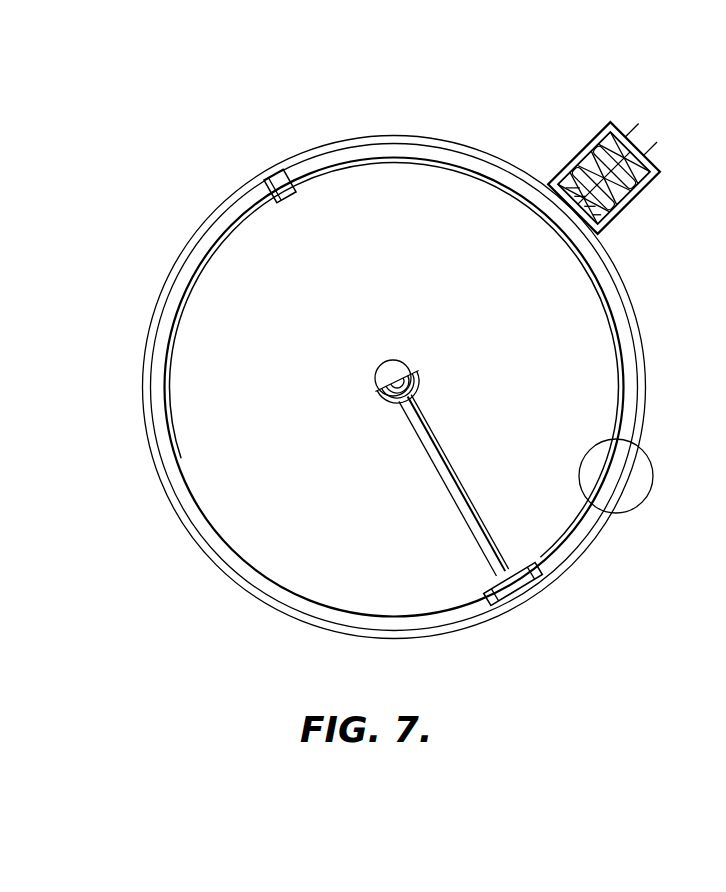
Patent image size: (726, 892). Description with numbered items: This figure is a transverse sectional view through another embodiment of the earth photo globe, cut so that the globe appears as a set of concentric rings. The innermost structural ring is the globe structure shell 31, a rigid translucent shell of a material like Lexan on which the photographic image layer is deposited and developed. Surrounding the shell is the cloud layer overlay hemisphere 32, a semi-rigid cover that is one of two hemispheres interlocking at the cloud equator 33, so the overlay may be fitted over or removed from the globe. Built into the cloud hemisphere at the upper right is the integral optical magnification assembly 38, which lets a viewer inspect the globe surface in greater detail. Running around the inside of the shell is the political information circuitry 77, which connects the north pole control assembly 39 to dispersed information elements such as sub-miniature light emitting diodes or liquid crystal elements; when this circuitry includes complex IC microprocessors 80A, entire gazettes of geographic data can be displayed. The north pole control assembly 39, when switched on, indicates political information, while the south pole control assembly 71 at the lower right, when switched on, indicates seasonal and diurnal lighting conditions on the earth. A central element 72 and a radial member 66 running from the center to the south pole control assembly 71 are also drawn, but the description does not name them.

The globe structure shell 31 is at (389, 150).
The cloud layer overlay hemisphere 32 is at (463, 140).
The cloud equator 33 is at (150, 388).
The optical magnification assembly 38 is at (567, 165).
The north pole control assembly 39 is at (268, 176).
The IC microprocessors 80A is at (290, 196).
The pivot ball 72 is at (389, 360).
The political information circuitry 77 is at (607, 311).
The arm 66 is at (447, 452).
The south pole control assembly 71 is at (528, 592).